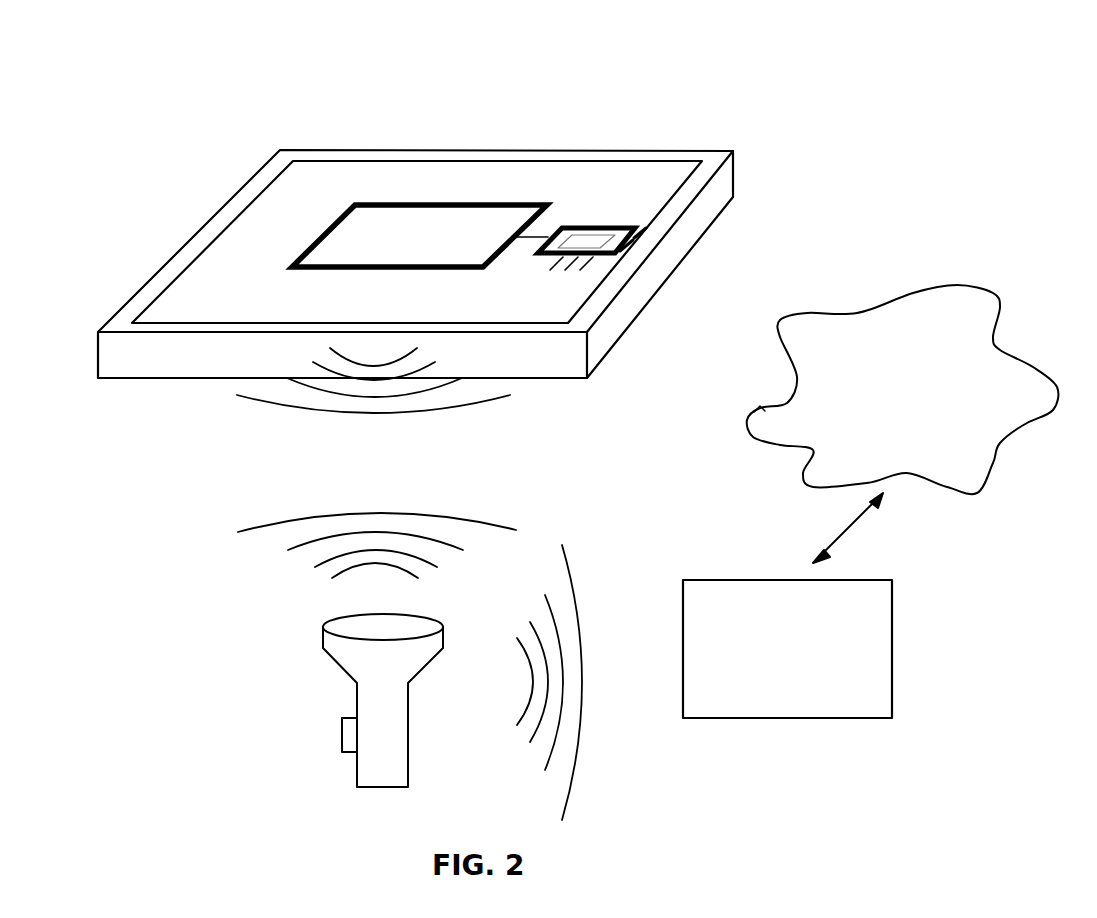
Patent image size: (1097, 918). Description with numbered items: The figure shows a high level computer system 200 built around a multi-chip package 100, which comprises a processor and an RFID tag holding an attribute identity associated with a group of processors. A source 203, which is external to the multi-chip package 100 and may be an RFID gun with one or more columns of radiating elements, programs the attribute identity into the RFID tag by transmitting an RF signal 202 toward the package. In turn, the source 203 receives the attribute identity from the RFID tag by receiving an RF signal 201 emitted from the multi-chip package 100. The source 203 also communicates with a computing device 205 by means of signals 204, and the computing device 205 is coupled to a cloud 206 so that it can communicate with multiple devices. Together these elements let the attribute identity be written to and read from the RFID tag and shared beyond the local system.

The computer system 200 is at (531, 49).
The multi-chip package 100 is at (337, 142).
The RF signal 201 is at (262, 407).
The RF signal 202 is at (278, 532).
The source 203 is at (352, 683).
The signals 204 is at (580, 735).
The computing device 205 is at (822, 718).
The cloud 206 is at (993, 462).